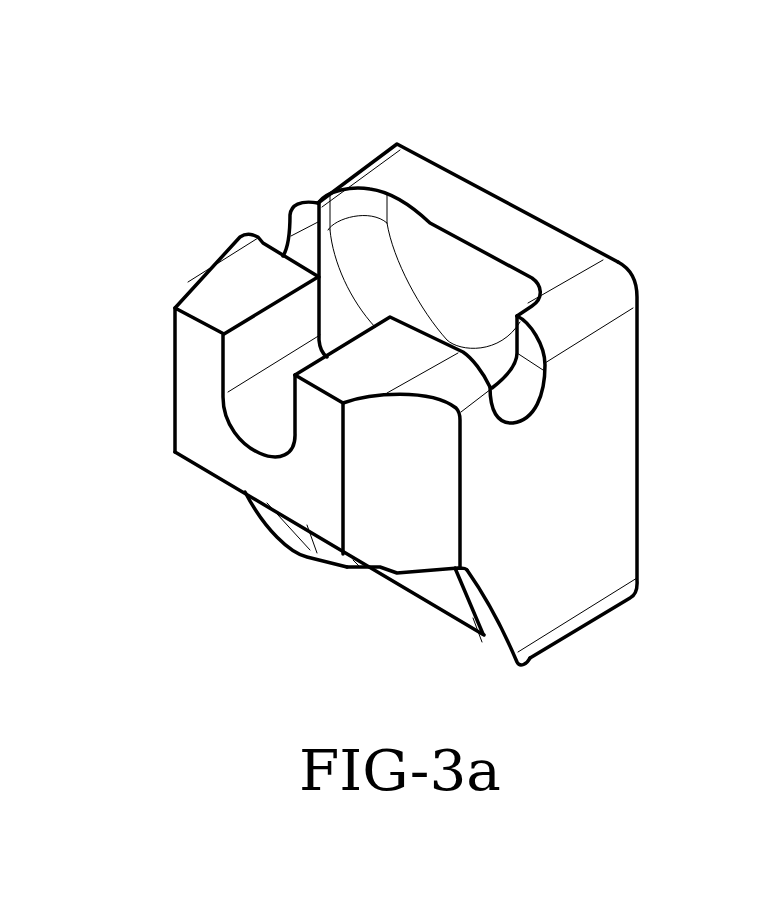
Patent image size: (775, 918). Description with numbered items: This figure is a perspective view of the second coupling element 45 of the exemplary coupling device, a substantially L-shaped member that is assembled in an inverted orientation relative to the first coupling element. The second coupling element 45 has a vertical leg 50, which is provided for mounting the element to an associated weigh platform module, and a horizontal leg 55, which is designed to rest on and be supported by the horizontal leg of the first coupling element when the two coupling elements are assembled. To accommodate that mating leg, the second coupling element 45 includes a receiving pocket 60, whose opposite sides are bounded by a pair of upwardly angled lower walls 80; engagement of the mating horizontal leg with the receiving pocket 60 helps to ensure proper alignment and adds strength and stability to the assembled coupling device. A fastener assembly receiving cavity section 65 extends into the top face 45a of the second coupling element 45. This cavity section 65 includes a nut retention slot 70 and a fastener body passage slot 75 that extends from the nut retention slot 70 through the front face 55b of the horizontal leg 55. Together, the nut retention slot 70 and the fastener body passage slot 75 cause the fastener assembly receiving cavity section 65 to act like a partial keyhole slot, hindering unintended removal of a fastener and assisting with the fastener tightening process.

The second coupling element 45 is at (221, 127).
The top face 45a is at (230, 295).
The vertical leg 50 is at (613, 438).
The horizontal leg 55 is at (220, 247).
The front face 55b is at (315, 483).
The receiving pocket 60 is at (433, 580).
The fastener assembly receiving cavity section 65 is at (441, 220).
The nut retention slot 70 is at (491, 273).
The fastener body passage slot 75 is at (245, 403).
The upwardly angled lower walls 80 is at (493, 632).